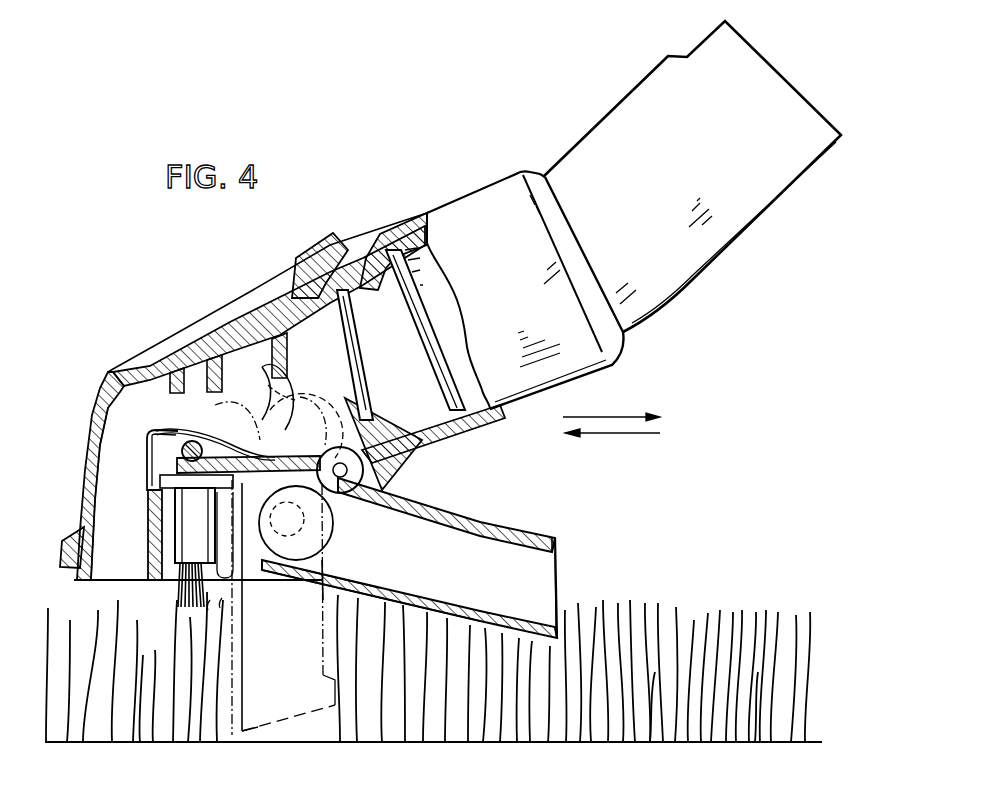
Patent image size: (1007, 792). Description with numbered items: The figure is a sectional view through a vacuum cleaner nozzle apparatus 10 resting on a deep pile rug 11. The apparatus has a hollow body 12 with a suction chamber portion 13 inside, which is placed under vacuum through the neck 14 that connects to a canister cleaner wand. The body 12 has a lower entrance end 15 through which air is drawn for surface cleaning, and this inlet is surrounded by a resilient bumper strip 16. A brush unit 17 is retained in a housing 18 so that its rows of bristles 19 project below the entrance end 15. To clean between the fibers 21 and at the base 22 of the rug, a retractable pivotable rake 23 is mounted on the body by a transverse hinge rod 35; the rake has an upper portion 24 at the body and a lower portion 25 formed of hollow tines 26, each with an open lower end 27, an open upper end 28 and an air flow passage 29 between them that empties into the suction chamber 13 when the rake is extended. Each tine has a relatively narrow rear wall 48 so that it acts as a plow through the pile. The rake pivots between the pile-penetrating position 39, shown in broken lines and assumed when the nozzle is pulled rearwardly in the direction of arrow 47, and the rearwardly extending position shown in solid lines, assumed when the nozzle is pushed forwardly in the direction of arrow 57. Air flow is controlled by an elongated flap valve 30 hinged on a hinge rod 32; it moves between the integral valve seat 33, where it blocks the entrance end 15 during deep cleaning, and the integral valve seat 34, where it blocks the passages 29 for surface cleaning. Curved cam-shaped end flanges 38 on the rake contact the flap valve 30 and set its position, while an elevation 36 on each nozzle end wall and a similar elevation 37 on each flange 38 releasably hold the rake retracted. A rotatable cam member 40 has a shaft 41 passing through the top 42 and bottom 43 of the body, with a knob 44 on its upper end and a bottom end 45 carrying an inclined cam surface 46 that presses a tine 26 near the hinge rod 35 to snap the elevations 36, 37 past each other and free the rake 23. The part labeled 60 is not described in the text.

The vacuum cleaner nozzle apparatus 10 is at (88, 436).
The deep pile rug 11 is at (557, 733).
The hollow body 12 is at (146, 364).
The suction chamber portion 13 is at (143, 424).
The neck 14 is at (710, 156).
The lower entrance end 15 is at (104, 588).
The resilient bumper strip 16 is at (62, 535).
The brush unit 17 is at (170, 578).
The housing 18 is at (148, 533).
The bristles 19 is at (190, 600).
The fibers 21 is at (655, 672).
The base 22 is at (735, 735).
The retractable pivotable rake 23 is at (490, 518).
The upper portion 24 is at (305, 600).
The lower portion 25 is at (535, 640).
The hollow tines 26 is at (545, 568).
The open lower end 27 is at (557, 590).
The open upper end 28 is at (364, 600).
The air flow passage 29 is at (447, 569).
The flap valve 30 is at (268, 435).
The hinge rod 32 is at (205, 403).
The integral valve seat 33 is at (268, 385).
The integral valve seat 34 is at (312, 448).
The hinge rod 35 is at (340, 482).
The projection or elevation 36 is at (306, 582).
The projection or elevation 37 is at (337, 522).
The end flanges 38 is at (255, 584).
The pile-penetrating position 39 is at (332, 688).
The rotatable cam member 40 is at (326, 238).
The shaft 41 is at (368, 356).
The top 42 is at (243, 327).
The bottom 43 is at (462, 434).
The knob 44 is at (300, 252).
The bottom end 45 is at (412, 460).
The inclined cam surface 46 is at (395, 483).
The arrow 47 is at (600, 417).
The rear wall 48 is at (528, 530).
The arrow 57 is at (622, 437).
The bracket 60 is at (148, 446).